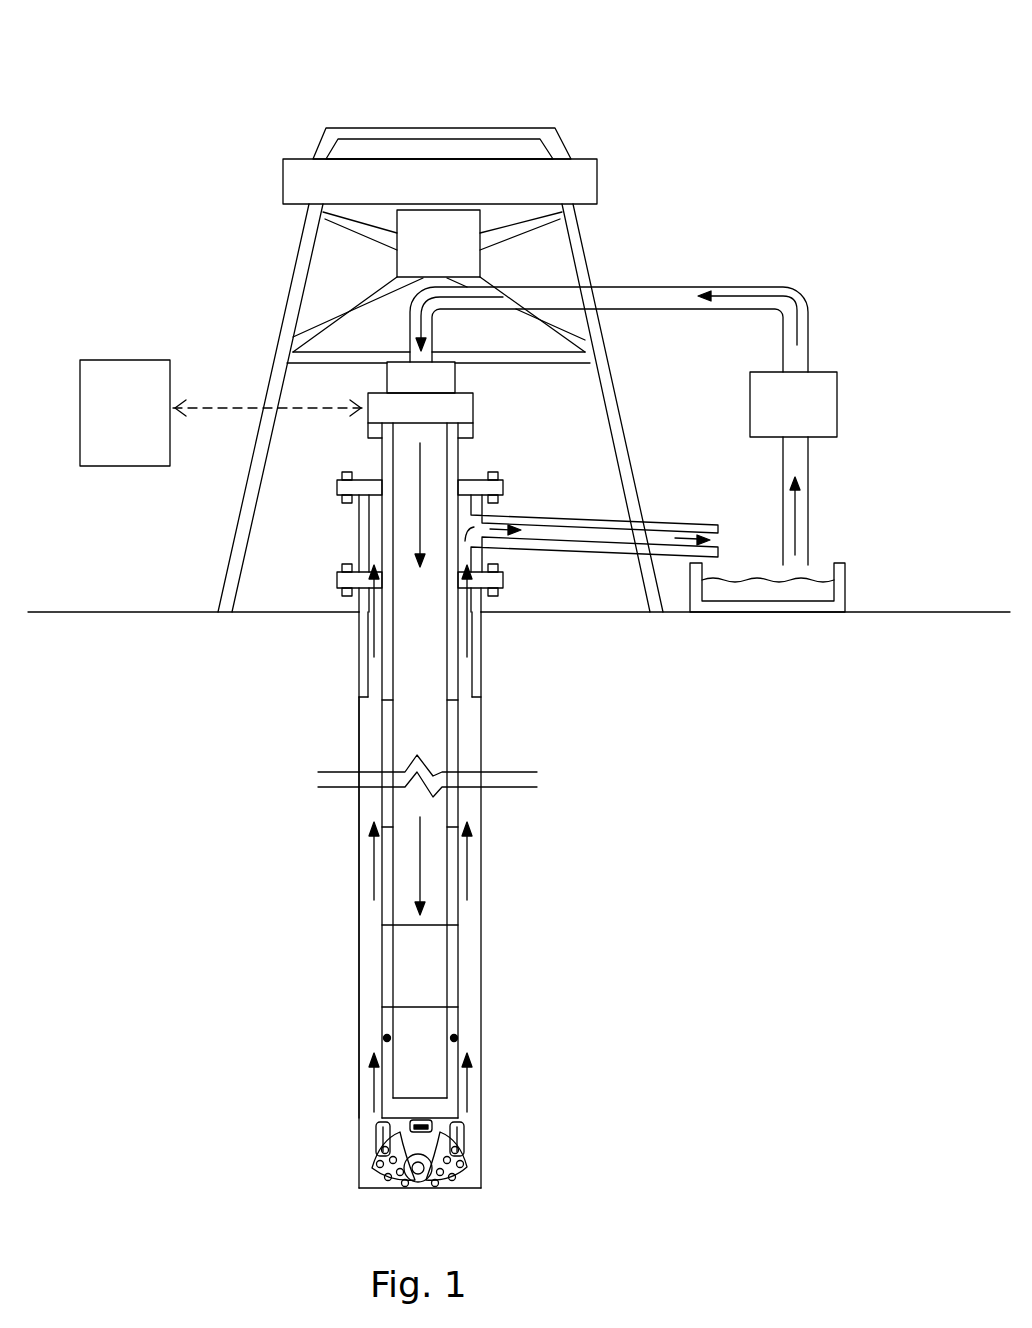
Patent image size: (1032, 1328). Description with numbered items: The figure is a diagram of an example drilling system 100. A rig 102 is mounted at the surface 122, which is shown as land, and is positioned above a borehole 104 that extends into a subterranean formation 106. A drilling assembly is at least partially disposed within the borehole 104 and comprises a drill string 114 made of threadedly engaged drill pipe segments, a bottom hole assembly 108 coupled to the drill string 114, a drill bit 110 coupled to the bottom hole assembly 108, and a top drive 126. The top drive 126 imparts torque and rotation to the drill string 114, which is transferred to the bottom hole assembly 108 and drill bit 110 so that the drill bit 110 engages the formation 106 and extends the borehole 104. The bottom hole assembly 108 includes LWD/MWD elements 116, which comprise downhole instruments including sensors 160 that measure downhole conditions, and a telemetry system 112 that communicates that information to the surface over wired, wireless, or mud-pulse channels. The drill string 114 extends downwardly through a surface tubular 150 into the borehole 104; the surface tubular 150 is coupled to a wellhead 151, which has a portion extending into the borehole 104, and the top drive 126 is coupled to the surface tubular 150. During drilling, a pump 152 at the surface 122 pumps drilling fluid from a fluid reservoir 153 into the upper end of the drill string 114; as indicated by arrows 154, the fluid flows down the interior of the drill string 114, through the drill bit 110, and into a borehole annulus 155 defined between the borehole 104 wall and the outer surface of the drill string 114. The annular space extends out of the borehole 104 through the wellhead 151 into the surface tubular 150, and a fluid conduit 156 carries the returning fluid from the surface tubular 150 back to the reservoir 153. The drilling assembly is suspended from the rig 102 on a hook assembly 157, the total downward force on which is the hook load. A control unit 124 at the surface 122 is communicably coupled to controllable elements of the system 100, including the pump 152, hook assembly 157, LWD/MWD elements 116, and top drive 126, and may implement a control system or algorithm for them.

The drilling system 100 is at (727, 63).
The rig 102 is at (290, 288).
The borehole 104 is at (468, 727).
The subterranean formation 106 is at (778, 746).
The bottom hole assembly (BHA) 108 is at (460, 963).
The drill bit 110 is at (465, 1139).
The telemetry system 112 is at (364, 965).
The drill string 114 is at (361, 747).
The LWD/MWD elements 116 is at (361, 1114).
The surface 122 is at (118, 612).
The control unit 124 is at (221, 413).
The top drive 126 is at (420, 400).
The surface tubular 150 is at (357, 548).
The wellhead 151 is at (359, 672).
The pump 152 is at (793, 404).
The fluid reservoir 153 is at (846, 593).
The arrows 154 is at (741, 287).
The borehole annulus 155 is at (472, 910).
The fluid conduit 156 is at (660, 536).
The hook assembly 157 is at (438, 243).
The sensors 160 is at (387, 1036).